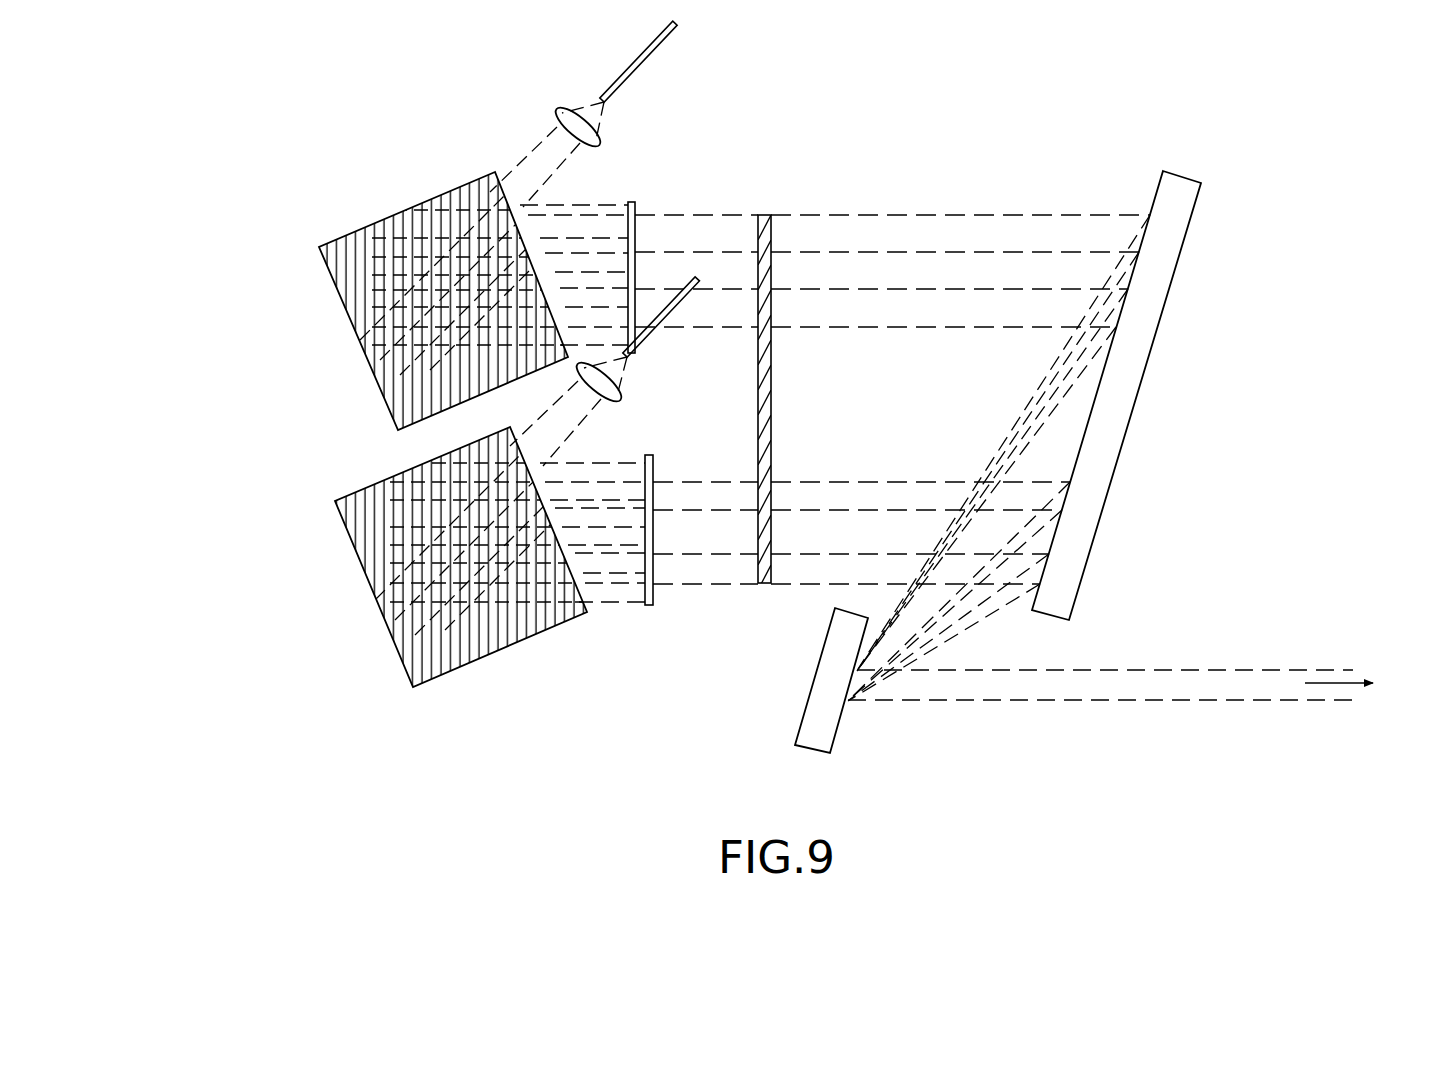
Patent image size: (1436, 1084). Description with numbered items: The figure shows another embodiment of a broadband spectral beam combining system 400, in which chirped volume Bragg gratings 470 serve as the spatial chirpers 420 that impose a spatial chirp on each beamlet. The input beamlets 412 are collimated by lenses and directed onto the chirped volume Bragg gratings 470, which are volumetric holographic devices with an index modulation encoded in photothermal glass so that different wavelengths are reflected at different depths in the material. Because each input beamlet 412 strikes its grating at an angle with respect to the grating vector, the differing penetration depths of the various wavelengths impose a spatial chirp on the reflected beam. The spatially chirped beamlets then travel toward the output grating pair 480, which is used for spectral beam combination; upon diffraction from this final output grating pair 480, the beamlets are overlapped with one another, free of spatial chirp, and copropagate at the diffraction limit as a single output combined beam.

The broadband SBC system 400 is at (1260, 110).
The input beamlets 412 is at (615, 80).
The spatial chirpers 420 is at (587, 720).
The chirped volume Bragg gratings 470 is at (326, 268).
The output grating pair 480 is at (1018, 773).